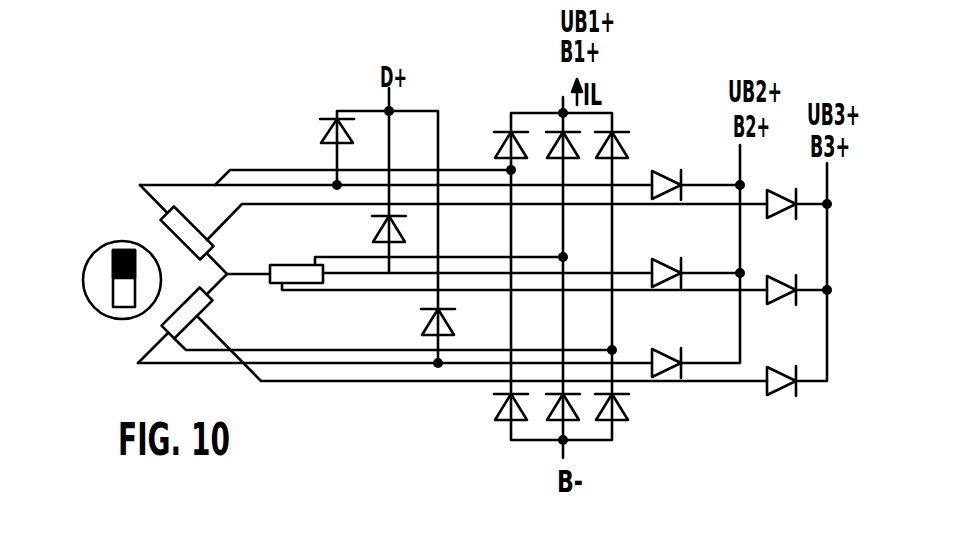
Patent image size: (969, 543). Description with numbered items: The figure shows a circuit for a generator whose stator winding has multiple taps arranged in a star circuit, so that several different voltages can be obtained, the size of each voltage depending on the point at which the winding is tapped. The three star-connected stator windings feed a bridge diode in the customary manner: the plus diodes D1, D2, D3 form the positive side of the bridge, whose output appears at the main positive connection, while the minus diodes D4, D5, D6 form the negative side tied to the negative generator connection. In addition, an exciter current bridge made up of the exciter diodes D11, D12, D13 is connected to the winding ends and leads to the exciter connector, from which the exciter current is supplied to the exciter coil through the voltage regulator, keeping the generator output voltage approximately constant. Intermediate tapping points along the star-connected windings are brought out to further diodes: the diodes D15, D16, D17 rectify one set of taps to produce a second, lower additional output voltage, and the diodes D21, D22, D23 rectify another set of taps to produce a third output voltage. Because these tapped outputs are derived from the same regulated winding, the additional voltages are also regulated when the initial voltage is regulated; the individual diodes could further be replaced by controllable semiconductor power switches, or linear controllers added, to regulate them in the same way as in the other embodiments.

The plus diode D1 is at (500, 150).
The plus diode D2 is at (557, 140).
The plus diode D3 is at (623, 147).
The minus diode D4 is at (503, 402).
The minus diode D5 is at (555, 415).
The minus diode D6 is at (622, 412).
The exciter diode D11 is at (320, 136).
The exciter diode D12 is at (378, 236).
The exciter diode D13 is at (422, 323).
The tap diode D15 is at (662, 170).
The tap diode D16 is at (662, 259).
The tap diode D17 is at (662, 349).
The tap diode D21 is at (777, 190).
The tap diode D22 is at (782, 264).
The tap diode D23 is at (777, 367).